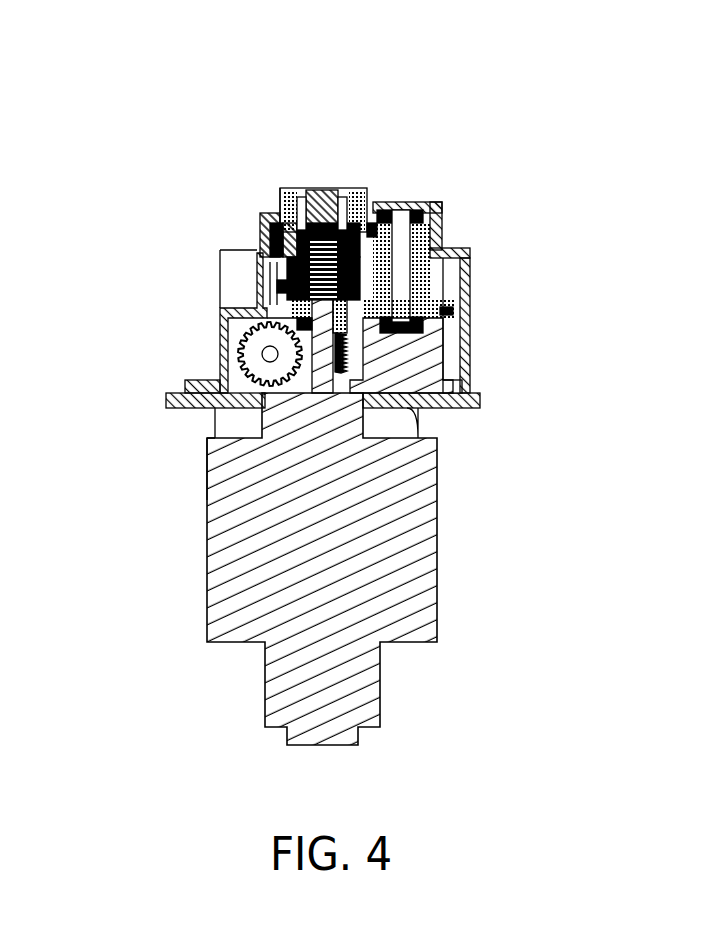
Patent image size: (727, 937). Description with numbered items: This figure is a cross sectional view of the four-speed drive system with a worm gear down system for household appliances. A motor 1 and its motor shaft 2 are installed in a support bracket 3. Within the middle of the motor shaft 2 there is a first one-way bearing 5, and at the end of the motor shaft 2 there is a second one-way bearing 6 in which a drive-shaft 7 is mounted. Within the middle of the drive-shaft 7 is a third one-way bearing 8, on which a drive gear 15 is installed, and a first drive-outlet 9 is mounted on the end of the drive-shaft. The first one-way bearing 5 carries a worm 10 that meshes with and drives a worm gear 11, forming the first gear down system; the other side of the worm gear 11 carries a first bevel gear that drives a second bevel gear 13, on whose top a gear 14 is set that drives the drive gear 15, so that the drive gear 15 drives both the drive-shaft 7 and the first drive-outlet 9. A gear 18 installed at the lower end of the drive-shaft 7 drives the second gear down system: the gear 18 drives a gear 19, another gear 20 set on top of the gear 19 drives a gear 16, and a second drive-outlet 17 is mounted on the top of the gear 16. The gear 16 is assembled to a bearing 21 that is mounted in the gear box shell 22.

The motor 1 is at (390, 537).
The motor shaft 2 is at (333, 390).
The support bracket 3 is at (208, 440).
The first one-way bearing 5 is at (340, 397).
The second one-way bearing 6 is at (452, 402).
The drive-shaft 7 is at (443, 247).
The third one-way bearing 8 is at (443, 215).
The first drive-outlet 9 is at (343, 193).
The worm 10 is at (217, 407).
The worm gear 11 is at (220, 357).
The second bevel gear 13 is at (228, 330).
The gear 14 is at (263, 274).
The drive gear 15 is at (257, 260).
The gear 16 is at (257, 227).
The second drive-outlet 17 is at (273, 190).
The gear 18 is at (430, 323).
The gear 19 is at (445, 308).
The gear 20 is at (438, 279).
The bearing 21 is at (372, 215).
The gear box shell 22 is at (472, 375).